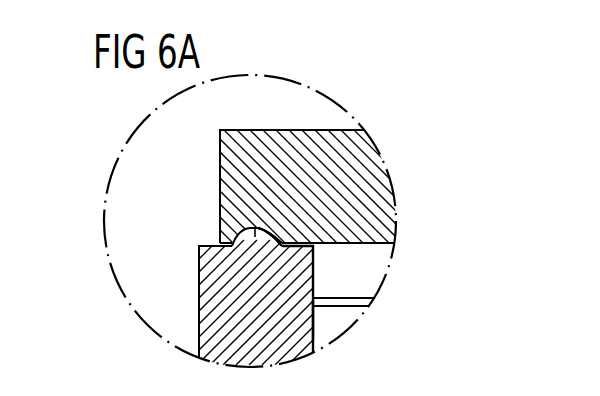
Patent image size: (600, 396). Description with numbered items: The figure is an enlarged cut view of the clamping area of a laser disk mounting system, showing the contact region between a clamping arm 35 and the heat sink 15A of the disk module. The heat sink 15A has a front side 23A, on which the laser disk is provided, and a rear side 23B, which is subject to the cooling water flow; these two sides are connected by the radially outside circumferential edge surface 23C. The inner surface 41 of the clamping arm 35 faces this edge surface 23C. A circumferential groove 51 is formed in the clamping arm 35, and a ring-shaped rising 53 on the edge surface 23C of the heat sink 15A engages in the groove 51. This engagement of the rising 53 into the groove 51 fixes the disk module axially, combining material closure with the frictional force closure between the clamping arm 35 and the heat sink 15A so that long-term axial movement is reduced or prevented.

The clamping arm 35 is at (298, 135).
The heat sink 15A is at (211, 276).
The front side 23A is at (194, 321).
The rear side 23B is at (318, 320).
The edge surface 23C is at (218, 240).
The groove 51 is at (266, 233).
The rising 53 is at (271, 237).
The inner surface 41 is at (288, 249).